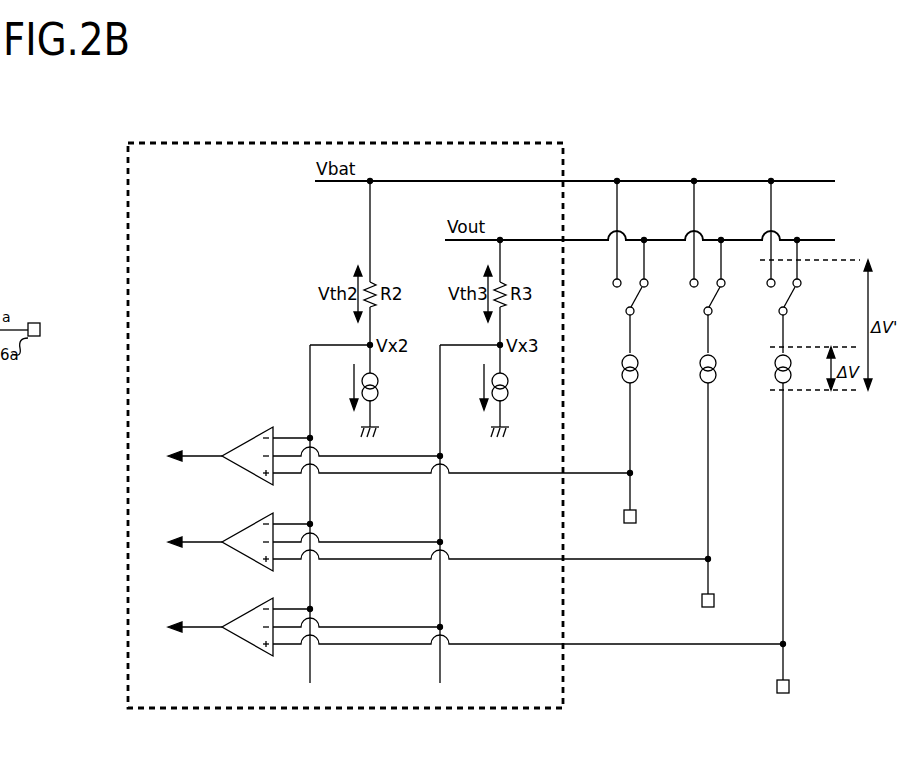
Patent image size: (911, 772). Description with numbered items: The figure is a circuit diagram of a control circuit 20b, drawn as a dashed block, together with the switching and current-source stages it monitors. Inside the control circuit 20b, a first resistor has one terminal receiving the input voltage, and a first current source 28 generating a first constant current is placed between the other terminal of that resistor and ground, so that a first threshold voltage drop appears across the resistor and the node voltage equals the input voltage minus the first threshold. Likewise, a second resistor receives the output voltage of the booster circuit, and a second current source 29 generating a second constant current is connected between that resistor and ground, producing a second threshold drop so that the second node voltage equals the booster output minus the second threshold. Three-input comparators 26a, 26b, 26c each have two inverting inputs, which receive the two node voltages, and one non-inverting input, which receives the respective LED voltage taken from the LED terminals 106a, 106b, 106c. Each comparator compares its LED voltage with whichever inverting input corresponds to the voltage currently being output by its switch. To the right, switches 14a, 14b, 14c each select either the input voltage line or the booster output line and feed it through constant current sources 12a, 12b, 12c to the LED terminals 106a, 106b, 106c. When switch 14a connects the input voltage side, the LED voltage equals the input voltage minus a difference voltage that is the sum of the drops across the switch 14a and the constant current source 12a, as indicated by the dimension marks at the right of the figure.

The constant current source 12a is at (621, 370).
The constant current source 12b is at (699, 370).
The constant current source 12c is at (774, 370).
The switch 14a is at (620, 302).
The switch 14b is at (698, 302).
The switch 14c is at (774, 302).
The control circuit 20b is at (340, 708).
The three-input comparator 26a is at (247, 477).
The three-input comparator 26b is at (247, 563).
The three-input comparator 26c is at (247, 648).
The first current source 28 is at (380, 384).
The second current source 29 is at (510, 384).
The LED terminal 106a is at (636, 512).
The LED terminal 106b is at (714, 596).
The LED terminal 106c is at (789, 682).